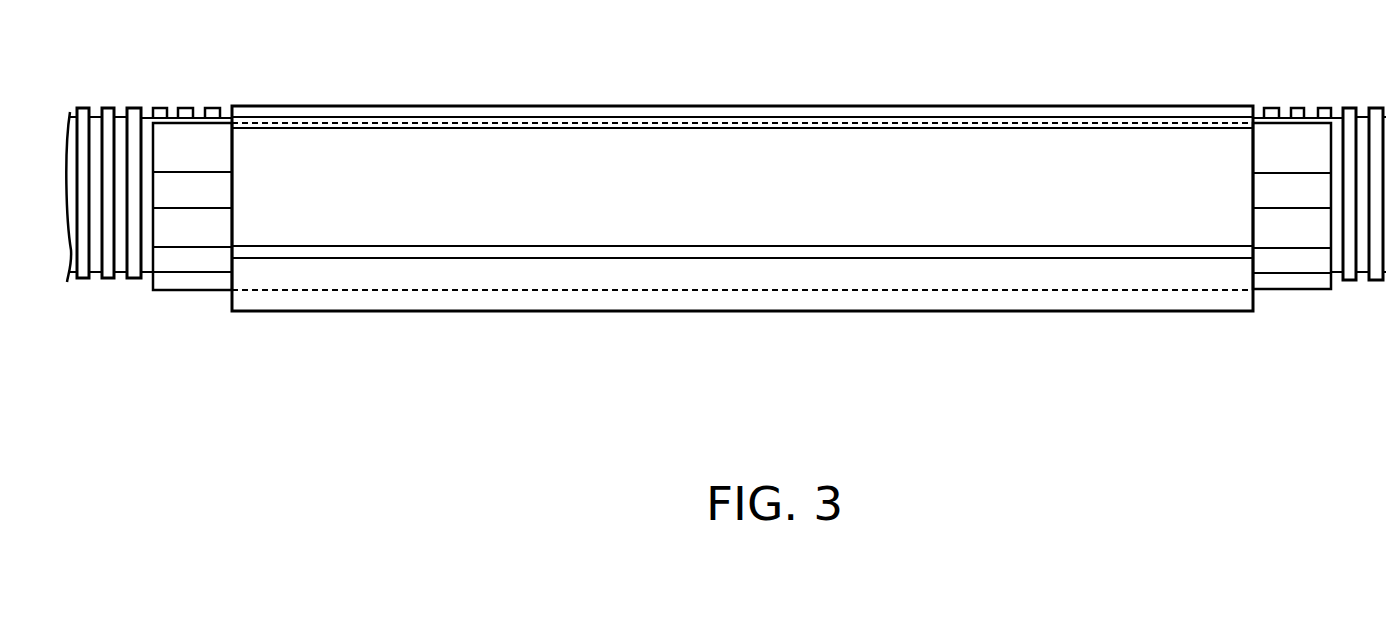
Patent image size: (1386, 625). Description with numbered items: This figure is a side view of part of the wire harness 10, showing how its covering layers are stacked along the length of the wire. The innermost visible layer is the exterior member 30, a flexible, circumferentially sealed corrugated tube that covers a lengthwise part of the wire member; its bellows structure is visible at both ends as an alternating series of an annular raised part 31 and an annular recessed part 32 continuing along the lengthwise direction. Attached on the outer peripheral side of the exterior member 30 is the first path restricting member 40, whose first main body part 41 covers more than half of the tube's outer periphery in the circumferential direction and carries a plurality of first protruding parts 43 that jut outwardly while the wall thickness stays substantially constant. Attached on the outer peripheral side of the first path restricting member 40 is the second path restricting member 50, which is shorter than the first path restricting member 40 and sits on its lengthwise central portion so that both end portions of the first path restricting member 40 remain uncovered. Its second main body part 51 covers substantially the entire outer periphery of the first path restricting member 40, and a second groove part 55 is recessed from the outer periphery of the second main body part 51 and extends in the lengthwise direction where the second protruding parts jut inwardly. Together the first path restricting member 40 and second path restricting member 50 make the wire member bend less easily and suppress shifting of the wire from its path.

The wire harness 10 is at (551, 384).
The exterior member 30 is at (109, 192).
The annular raised part 31 is at (110, 108).
The annular recessed part 32 is at (122, 117).
The first path restricting member 40 is at (782, 290).
The first main body part 41 is at (197, 228).
The first protruding part 43 is at (1273, 195).
The second path restricting member 50 is at (742, 240).
The second main body part 51 is at (330, 220).
The second groove part 55 is at (977, 252).